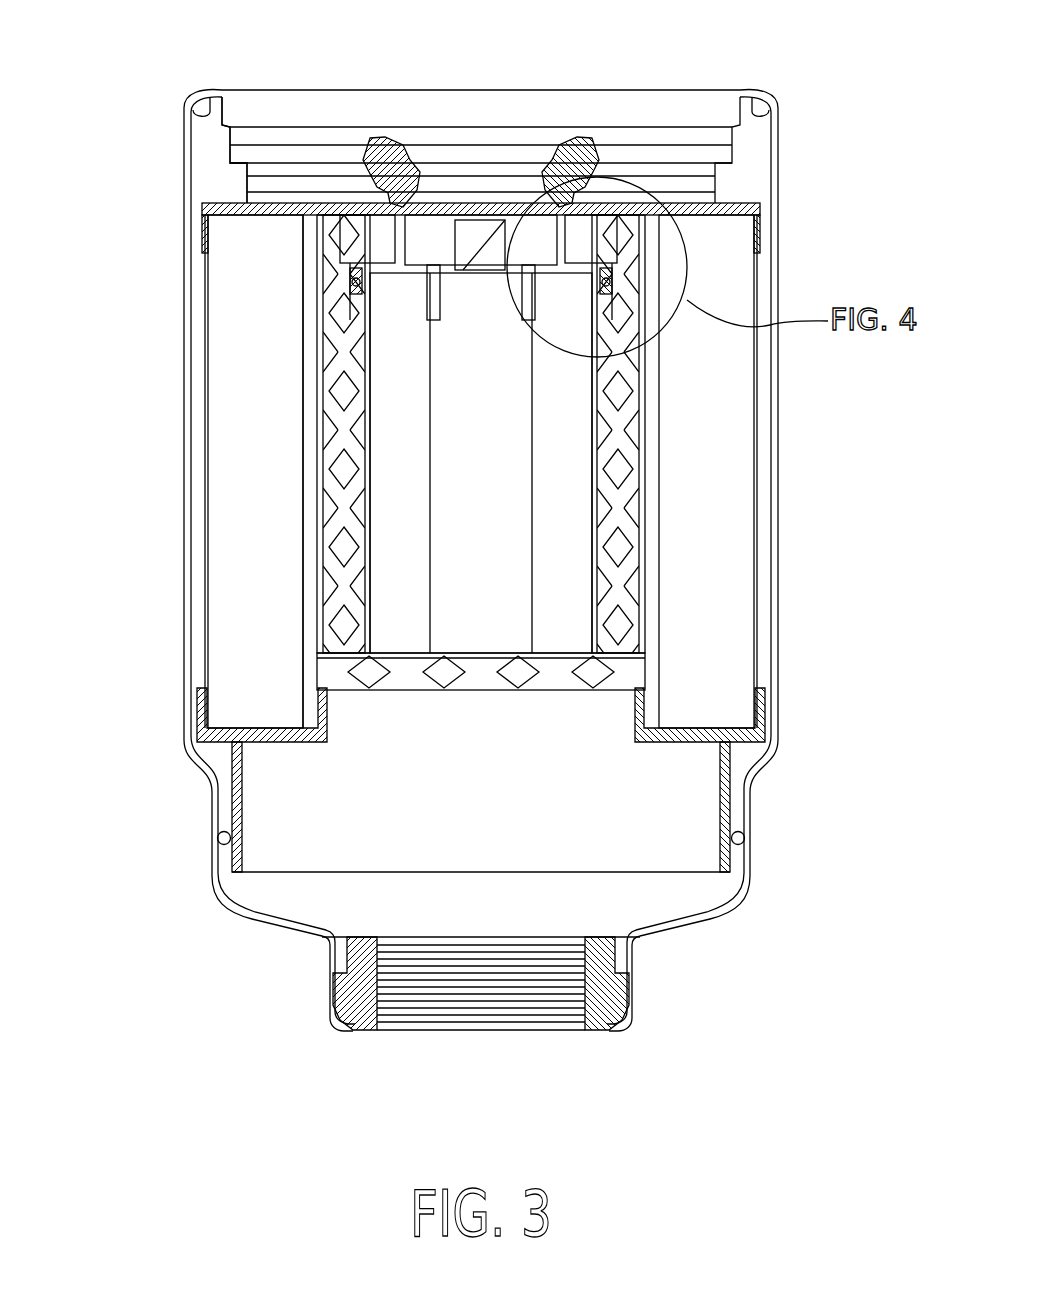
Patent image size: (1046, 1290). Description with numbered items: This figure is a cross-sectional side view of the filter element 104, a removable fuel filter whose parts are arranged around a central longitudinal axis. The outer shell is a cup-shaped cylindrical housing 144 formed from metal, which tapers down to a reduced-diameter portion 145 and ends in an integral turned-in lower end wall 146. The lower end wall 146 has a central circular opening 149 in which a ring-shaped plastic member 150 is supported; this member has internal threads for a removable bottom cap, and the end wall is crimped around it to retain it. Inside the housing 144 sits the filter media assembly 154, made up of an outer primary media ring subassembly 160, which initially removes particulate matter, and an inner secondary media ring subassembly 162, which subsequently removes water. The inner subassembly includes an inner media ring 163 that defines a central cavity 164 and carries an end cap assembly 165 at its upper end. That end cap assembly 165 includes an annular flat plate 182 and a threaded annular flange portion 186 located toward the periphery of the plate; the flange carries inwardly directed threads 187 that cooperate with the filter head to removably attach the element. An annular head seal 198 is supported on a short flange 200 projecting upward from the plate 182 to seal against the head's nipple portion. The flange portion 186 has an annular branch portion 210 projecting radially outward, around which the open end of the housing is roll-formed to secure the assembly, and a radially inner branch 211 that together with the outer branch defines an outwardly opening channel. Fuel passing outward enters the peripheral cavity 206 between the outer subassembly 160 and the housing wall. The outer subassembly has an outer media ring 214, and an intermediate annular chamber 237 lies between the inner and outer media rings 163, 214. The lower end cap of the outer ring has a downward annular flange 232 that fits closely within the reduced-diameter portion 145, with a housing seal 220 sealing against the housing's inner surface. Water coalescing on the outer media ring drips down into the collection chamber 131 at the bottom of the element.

The filter element 104 is at (765, 517).
The collection chamber 131 is at (520, 833).
The housing 144 is at (183, 468).
The reduced-diameter portion 145 is at (750, 808).
The lower end wall 146 is at (253, 922).
The central circular opening 149 is at (597, 1030).
The ring-shaped plastic member 150 is at (374, 1010).
The filter media assembly 154 is at (760, 273).
The outer primary media ring subassembly 160 is at (768, 593).
The inner secondary media ring subassembly 162 is at (358, 389).
The inner media ring 163 is at (237, 643).
The central cavity 164 is at (500, 572).
The end cap assembly 165 is at (777, 157).
The annular flat plate 182 is at (668, 200).
The threaded annular flange portion 186 is at (243, 189).
The inwardly directed threads 187 is at (300, 128).
The annular head seal 198 is at (570, 137).
The short flange 200 is at (682, 88).
The peripheral cavity 206 is at (764, 442).
The annular branch portion 210 is at (185, 106).
The radially inner branch 211 is at (213, 88).
The outer media ring 214 is at (740, 633).
The housing seal 220 is at (739, 840).
The annular flange 232 is at (723, 795).
The intermediate annular chamber 237 is at (300, 545).